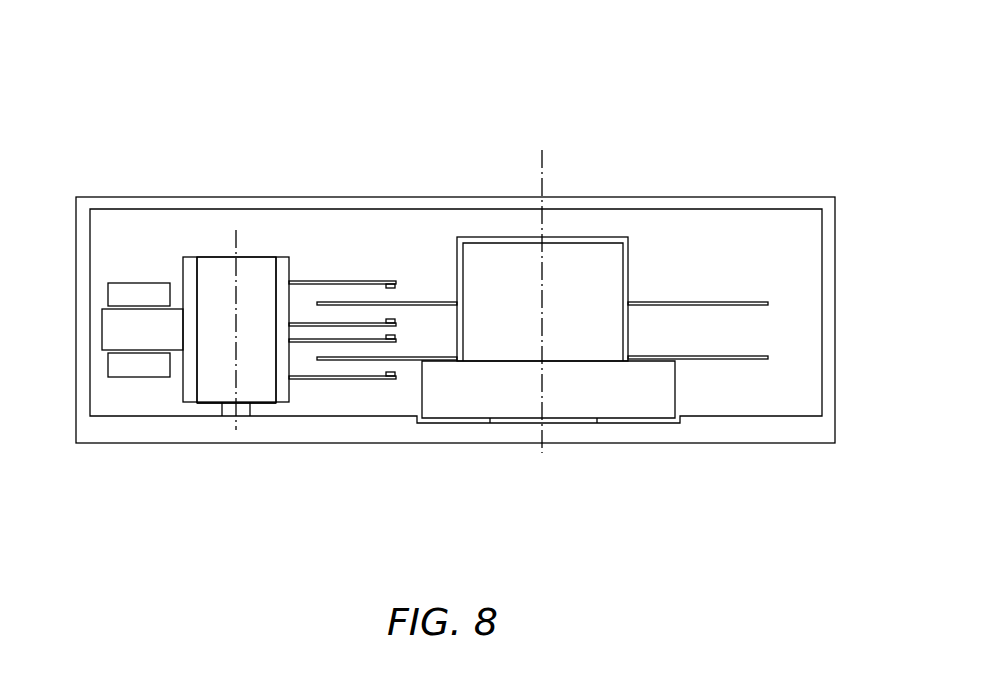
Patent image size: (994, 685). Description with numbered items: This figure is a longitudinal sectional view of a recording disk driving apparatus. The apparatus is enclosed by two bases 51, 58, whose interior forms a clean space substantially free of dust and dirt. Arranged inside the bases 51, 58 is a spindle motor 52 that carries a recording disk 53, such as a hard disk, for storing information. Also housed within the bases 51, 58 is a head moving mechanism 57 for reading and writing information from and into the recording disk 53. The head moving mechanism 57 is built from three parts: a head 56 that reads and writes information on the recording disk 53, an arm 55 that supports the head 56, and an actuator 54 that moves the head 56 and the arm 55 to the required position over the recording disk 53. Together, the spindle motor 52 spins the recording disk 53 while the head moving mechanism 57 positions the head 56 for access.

The base 51 is at (842, 508).
The spindle motor 52 is at (502, 269).
The recording disk 53 is at (663, 298).
The actuator 54 is at (223, 288).
The arm 55 is at (320, 282).
The head 56 is at (395, 281).
The head moving mechanism 57 is at (233, 40).
The base 58 is at (635, 200).